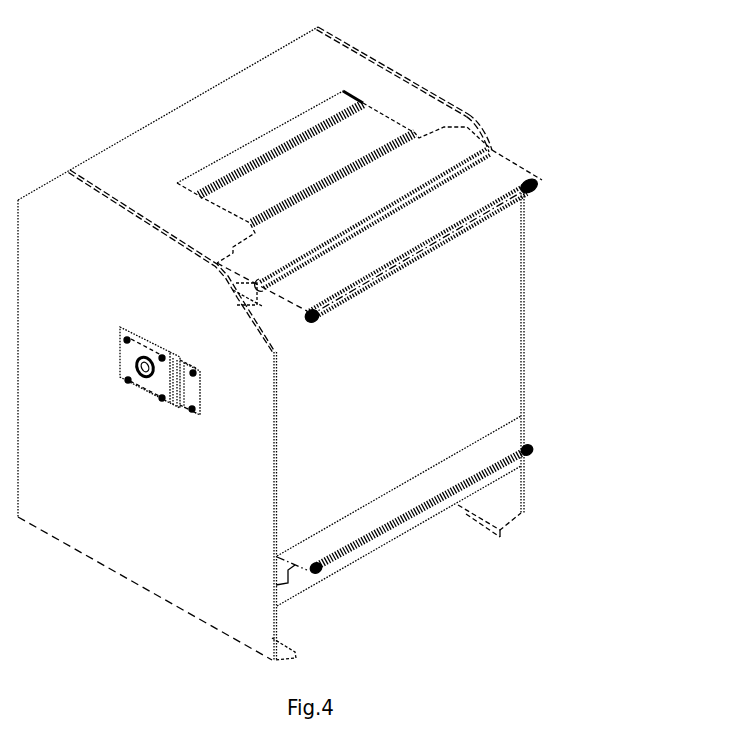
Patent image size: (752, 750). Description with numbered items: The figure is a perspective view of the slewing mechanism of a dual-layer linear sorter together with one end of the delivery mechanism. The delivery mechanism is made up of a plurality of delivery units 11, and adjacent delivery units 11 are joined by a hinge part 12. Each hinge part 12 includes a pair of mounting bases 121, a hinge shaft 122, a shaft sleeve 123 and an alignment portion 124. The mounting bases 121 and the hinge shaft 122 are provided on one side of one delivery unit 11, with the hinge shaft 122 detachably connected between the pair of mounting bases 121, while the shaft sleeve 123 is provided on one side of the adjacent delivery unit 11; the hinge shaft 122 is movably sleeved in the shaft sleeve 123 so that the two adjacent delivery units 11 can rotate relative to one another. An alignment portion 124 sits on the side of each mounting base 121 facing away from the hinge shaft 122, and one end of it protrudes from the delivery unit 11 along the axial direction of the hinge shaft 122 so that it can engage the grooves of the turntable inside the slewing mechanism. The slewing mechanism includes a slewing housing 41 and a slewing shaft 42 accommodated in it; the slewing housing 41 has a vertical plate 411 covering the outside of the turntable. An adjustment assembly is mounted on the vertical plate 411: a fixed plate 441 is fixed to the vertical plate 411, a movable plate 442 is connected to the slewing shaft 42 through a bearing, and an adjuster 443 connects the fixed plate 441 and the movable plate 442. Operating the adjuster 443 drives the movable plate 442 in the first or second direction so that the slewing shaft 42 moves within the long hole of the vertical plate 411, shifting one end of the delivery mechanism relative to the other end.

The delivery unit 11 is at (495, 174).
The hinge part 12 is at (456, 300).
The mounting base 121 is at (340, 320).
The hinge shaft 122 is at (404, 263).
The shaft sleeve 123 is at (426, 512).
The alignment portion 124 is at (310, 323).
The slewing housing 41 is at (524, 360).
The vertical plate 411 is at (243, 525).
The slewing shaft 42 is at (145, 358).
The fixed plate 441 is at (180, 408).
The movable plate 442 is at (120, 358).
The adjuster 443 is at (200, 410).